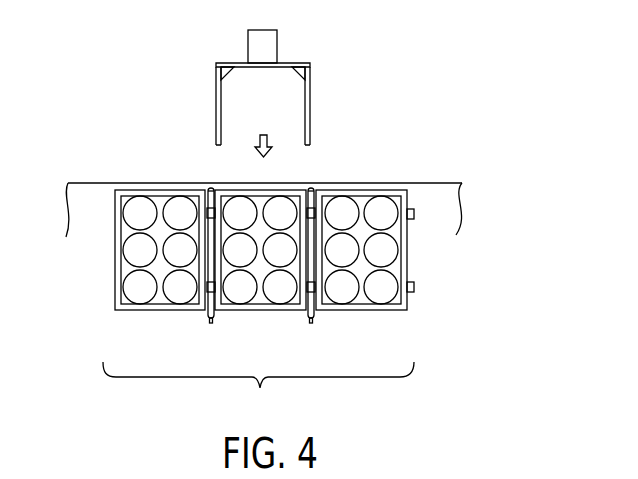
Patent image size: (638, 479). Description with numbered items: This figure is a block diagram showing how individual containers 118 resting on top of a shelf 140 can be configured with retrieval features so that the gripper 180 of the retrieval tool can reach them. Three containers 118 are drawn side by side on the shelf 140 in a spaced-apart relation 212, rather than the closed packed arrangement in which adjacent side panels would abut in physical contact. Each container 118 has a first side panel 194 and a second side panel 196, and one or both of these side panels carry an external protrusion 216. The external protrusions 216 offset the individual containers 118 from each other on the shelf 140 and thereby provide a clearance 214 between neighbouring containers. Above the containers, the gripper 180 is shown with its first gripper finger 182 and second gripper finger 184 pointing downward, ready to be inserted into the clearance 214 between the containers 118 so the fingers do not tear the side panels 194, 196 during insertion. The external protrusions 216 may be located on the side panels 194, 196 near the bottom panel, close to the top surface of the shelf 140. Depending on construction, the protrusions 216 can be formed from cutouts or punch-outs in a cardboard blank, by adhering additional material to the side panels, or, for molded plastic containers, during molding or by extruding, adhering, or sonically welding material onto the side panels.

The individual container 118 is at (158, 311).
The shelf 140 is at (106, 219).
The gripper 180 is at (286, 61).
The first gripper finger 182 is at (216, 100).
The second gripper finger 184 is at (310, 103).
The first side panel 194 is at (209, 192).
The second side panel 196 is at (313, 192).
The spaced-apart relation 212 is at (287, 275).
The clearance 214 is at (211, 323).
The external protrusion 216 is at (303, 205).